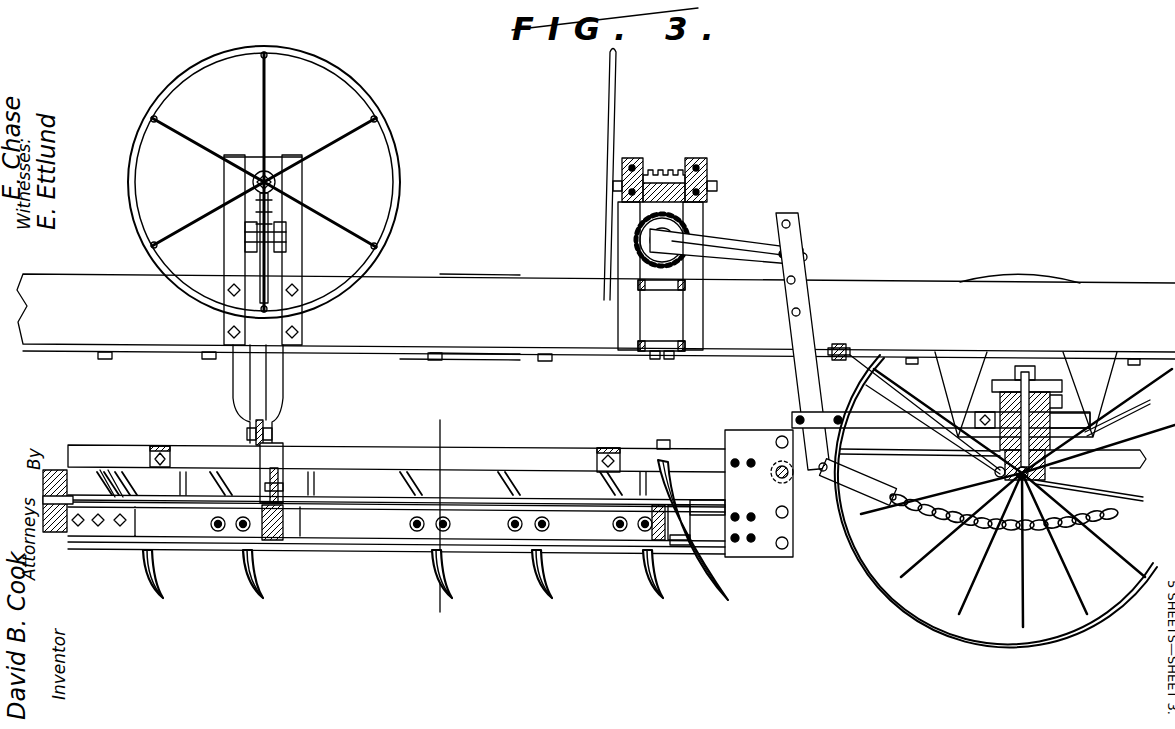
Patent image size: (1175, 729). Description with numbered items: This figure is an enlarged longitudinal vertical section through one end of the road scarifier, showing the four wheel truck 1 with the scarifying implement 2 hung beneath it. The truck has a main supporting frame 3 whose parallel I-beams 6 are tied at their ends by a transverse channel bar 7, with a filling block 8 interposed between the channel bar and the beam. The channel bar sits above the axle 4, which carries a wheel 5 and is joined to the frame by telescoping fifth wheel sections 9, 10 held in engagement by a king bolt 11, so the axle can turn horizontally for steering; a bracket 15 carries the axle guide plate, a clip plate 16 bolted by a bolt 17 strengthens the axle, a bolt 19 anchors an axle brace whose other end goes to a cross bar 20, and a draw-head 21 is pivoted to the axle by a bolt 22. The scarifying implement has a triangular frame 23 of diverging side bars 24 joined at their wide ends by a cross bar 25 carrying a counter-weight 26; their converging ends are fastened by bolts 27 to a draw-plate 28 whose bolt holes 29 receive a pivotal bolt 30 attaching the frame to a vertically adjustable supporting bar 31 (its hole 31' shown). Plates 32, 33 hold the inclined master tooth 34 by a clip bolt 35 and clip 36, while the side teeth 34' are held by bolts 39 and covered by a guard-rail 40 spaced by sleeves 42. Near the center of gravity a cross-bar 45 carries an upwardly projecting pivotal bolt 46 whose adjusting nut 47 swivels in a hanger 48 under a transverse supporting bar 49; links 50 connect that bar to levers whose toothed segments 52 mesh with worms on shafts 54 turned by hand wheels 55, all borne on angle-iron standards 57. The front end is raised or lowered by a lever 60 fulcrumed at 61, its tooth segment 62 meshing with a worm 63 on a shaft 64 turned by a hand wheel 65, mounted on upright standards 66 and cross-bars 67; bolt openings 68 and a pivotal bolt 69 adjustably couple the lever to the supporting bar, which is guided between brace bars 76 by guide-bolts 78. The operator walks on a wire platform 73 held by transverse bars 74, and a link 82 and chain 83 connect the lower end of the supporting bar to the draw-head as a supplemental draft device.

The four wheel truck 1 is at (972, 293).
The scarifying implement 2 is at (147, 521).
The main supporting frame 3 is at (226, 246).
The axle 4 is at (972, 518).
The wheel 5 is at (985, 623).
The I-beam 6 is at (468, 292).
The channel bar 7 is at (1045, 380).
The filling block 8 is at (1000, 366).
The fifth wheel section 9 is at (1046, 422).
The fifth wheel section 10 is at (998, 392).
The king bolt 11 is at (1058, 397).
The bracket 15 is at (1100, 431).
The clip plate 16 is at (990, 473).
The bolt 17 is at (985, 468).
The bolt 19 is at (1010, 518).
The cross bar 20 is at (836, 346).
The draw-head 21 is at (1108, 470).
The bolt 22 is at (1052, 458).
The triangular frame 23 is at (80, 476).
The side bar 24 is at (497, 530).
The cross bar 25 is at (72, 498).
The counter-weight 26 is at (52, 470).
The bolt 27 is at (752, 545).
The draw-plate 28 is at (751, 435).
The bolt hole 29 is at (786, 542).
The pivotal bolt 30 is at (776, 477).
The supporting bar 31 is at (793, 341).
The link hole 31' is at (820, 266).
The plate 32 is at (680, 546).
The plate 33 is at (702, 510).
The master tooth 34 is at (693, 542).
The cutter bar or tooth 34' is at (403, 580).
The clip bolt 35 is at (672, 545).
The clip 36 is at (655, 522).
The bolt 39 is at (212, 523).
The guard-rail 40 is at (545, 450).
The spacing sleeve 42 is at (150, 483).
The cross-bar 45 is at (275, 542).
The pivotal bolt 46 is at (278, 472).
The adjusting nut 47 is at (285, 504).
The hanger 48 is at (262, 458).
The supporting bar 49 is at (272, 430).
The link 50 is at (240, 392).
The toothed segment 52 is at (274, 208).
The rotary shaft 54 is at (270, 172).
The hand wheel 55 is at (372, 103).
The angle-iron 57 is at (228, 188).
The lever 60 is at (775, 250).
The fulcrum 61 is at (650, 240).
The tooth segment 62 is at (690, 228).
The worm 63 is at (660, 170).
The shaft 64 is at (700, 182).
The hand wheel 65 is at (607, 120).
The upright standard 66 is at (690, 318).
The cross-bar 67 is at (660, 291).
The bolt opening 68 is at (808, 255).
The pivotal bolt 69 is at (781, 259).
The platform 73 is at (470, 350).
The transverse bar 74 is at (445, 356).
The brace bar 76 is at (908, 429).
The guide-bolt 78 is at (840, 416).
The link 82 is at (860, 483).
The chain 83 is at (1035, 528).